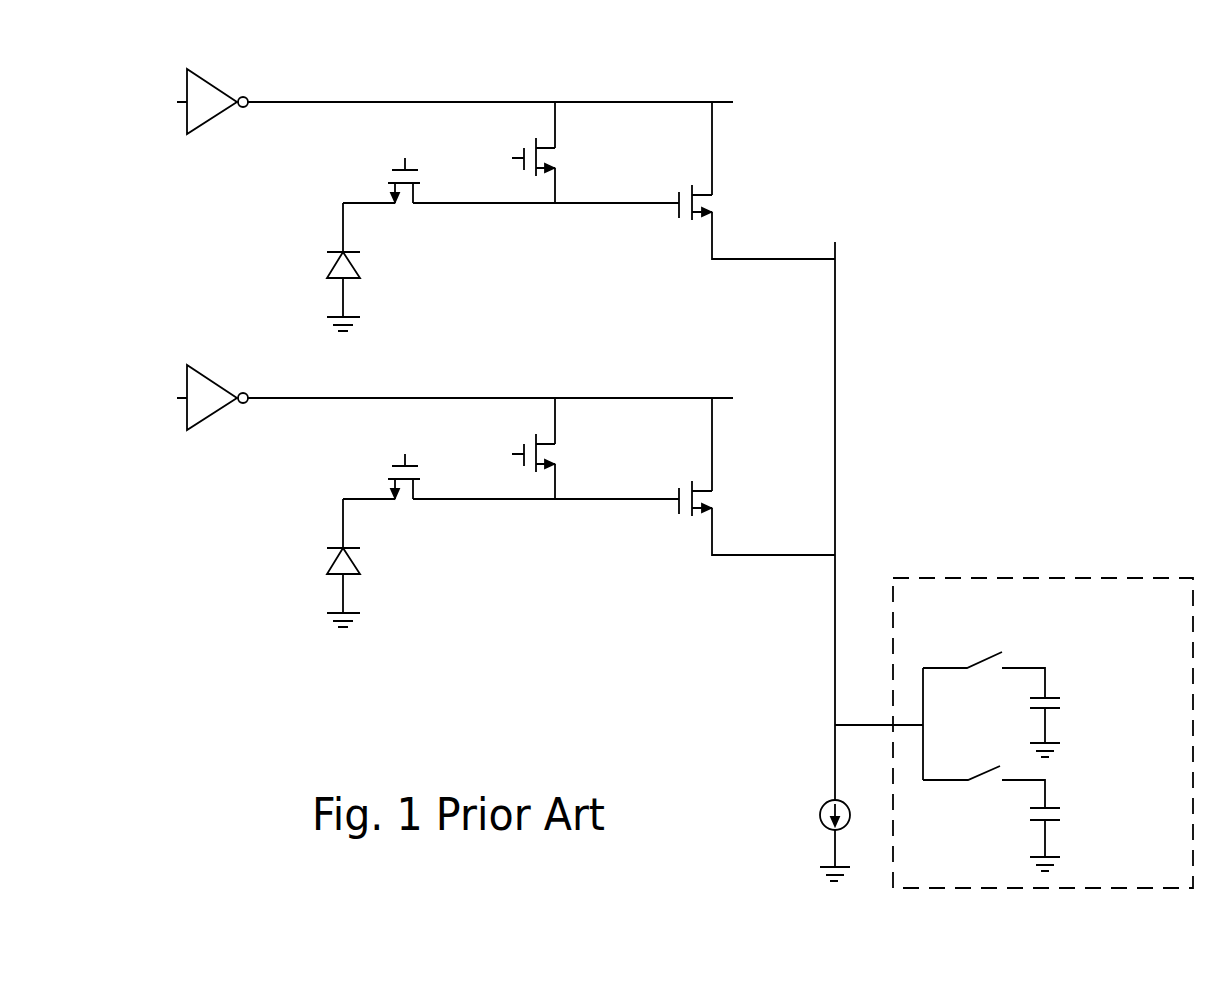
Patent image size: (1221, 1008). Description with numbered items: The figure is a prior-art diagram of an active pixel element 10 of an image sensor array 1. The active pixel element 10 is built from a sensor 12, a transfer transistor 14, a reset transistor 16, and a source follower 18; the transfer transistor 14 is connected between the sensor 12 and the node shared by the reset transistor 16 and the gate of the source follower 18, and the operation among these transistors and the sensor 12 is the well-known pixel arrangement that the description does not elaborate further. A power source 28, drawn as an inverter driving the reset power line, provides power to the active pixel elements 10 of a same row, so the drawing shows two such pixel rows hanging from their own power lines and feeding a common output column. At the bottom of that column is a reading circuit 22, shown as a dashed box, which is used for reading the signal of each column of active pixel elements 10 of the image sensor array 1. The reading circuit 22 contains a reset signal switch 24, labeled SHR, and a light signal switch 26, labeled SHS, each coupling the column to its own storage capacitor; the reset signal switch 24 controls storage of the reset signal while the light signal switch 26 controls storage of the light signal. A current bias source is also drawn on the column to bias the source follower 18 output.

The image sensor array 1 is at (1073, 120).
The active pixel element 10 is at (858, 87).
The sensor 12 is at (325, 266).
The transfer transistor 14 is at (388, 178).
The reset transistor 16 is at (533, 140).
The source follower 18 is at (676, 216).
The reading circuit 22 is at (1110, 577).
The reset signal switch (SHR) 24 is at (1010, 657).
The light signal switch (SHS) 26 is at (985, 781).
The power source 28 is at (185, 97).